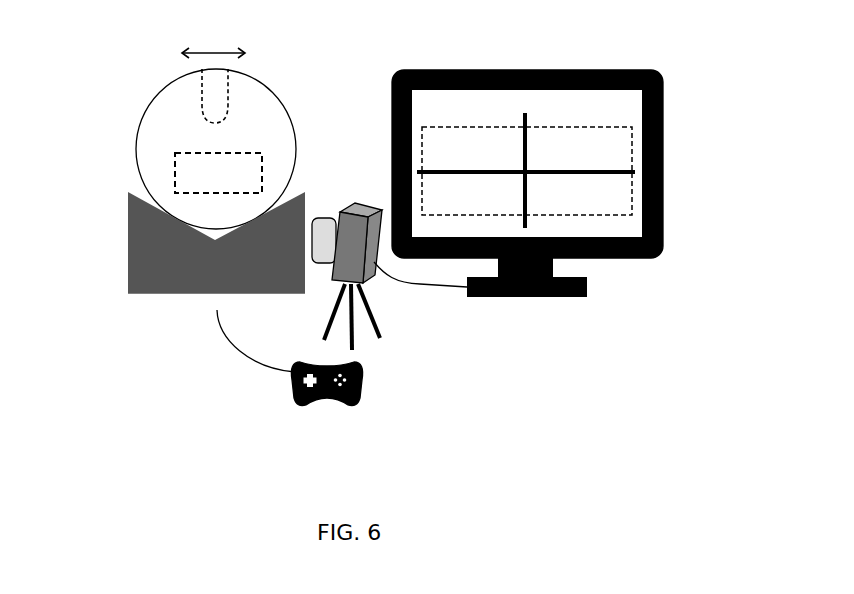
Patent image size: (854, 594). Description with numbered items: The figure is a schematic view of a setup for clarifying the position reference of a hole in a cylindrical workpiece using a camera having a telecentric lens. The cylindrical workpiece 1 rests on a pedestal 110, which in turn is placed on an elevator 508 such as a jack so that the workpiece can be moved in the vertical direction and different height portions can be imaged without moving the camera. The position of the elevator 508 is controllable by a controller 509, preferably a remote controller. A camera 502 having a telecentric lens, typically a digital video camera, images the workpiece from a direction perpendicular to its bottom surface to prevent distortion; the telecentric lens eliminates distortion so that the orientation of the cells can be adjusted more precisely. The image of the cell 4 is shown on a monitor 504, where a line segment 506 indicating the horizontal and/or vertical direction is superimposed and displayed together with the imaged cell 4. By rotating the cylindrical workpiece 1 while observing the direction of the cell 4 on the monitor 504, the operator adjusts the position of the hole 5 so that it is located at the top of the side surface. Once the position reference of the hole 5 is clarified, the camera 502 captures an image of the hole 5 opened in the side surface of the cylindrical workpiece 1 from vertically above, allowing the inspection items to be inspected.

The cylindrical workpiece 1 is at (143, 125).
The hole 5 is at (202, 92).
The pedestal 110 is at (133, 226).
The elevator 508 is at (128, 300).
The camera having a telecentric lens 502 is at (355, 203).
The monitor 504 is at (446, 72).
The line segment 506 is at (480, 168).
The cell 4 is at (588, 135).
The controller 509 is at (293, 402).